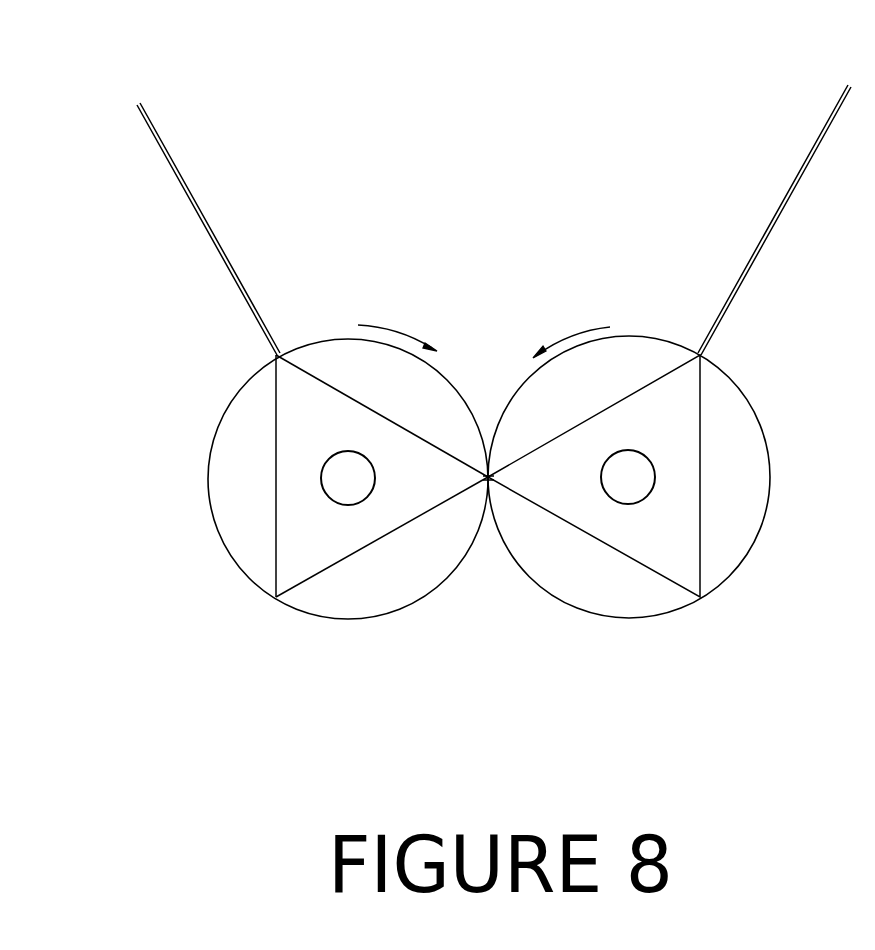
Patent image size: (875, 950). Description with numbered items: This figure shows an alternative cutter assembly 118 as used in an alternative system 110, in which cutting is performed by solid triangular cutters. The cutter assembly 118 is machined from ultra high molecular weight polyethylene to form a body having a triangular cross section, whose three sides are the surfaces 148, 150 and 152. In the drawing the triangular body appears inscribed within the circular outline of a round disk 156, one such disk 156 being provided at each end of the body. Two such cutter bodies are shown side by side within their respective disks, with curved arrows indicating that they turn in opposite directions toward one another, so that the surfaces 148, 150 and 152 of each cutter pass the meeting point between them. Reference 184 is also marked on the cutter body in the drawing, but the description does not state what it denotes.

The alternative system 110 is at (548, 221).
The alternative cutter assembly 118 is at (220, 537).
The surface 148 is at (403, 527).
The surface 150 is at (243, 432).
The surface 152 is at (432, 438).
The round disk 156 is at (725, 435).
The flat segment 184 is at (308, 397).